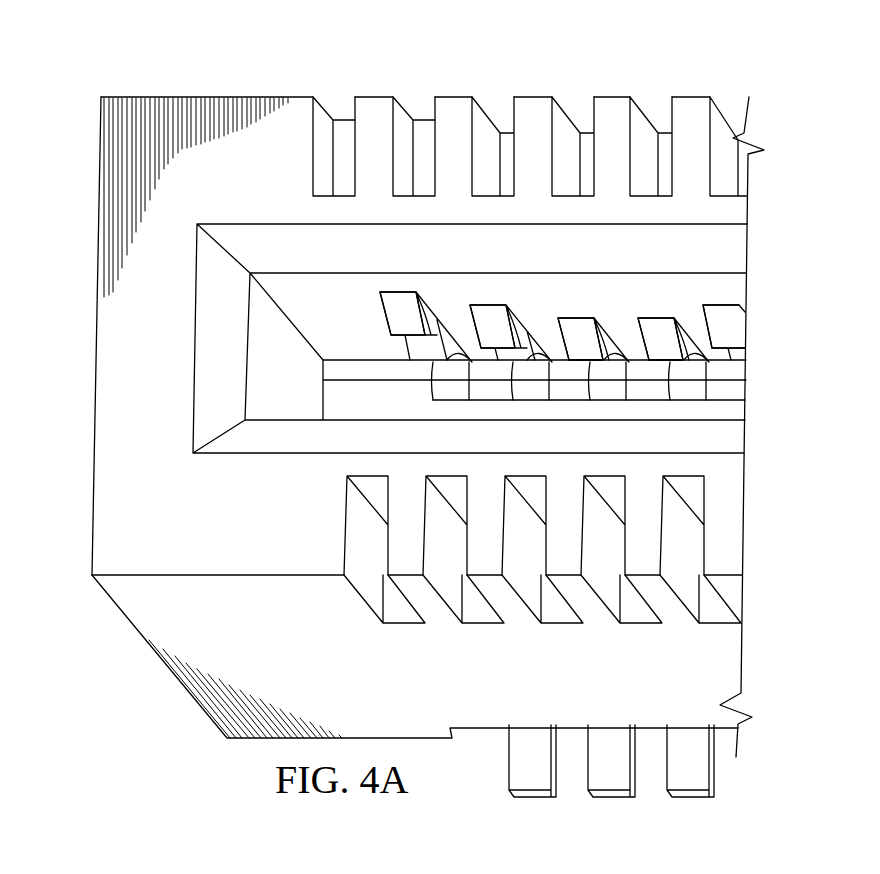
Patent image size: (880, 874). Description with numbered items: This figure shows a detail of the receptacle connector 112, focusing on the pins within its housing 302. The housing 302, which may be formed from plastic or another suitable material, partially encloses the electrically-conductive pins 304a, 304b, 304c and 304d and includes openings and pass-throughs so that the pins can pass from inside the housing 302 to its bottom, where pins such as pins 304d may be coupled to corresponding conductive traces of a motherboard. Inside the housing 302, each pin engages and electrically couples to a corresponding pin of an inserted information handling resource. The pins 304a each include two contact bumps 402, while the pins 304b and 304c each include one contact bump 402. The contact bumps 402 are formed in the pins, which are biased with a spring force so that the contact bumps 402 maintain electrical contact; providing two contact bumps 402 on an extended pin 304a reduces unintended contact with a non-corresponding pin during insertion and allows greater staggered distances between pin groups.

The receptacle connector 112 is at (727, 48).
The housing 302 is at (103, 336).
The pin 304a is at (378, 298).
The pin 304b is at (484, 306).
The pin 304c is at (577, 316).
The pin 304d is at (535, 798).
The contact bump 402 is at (466, 310).